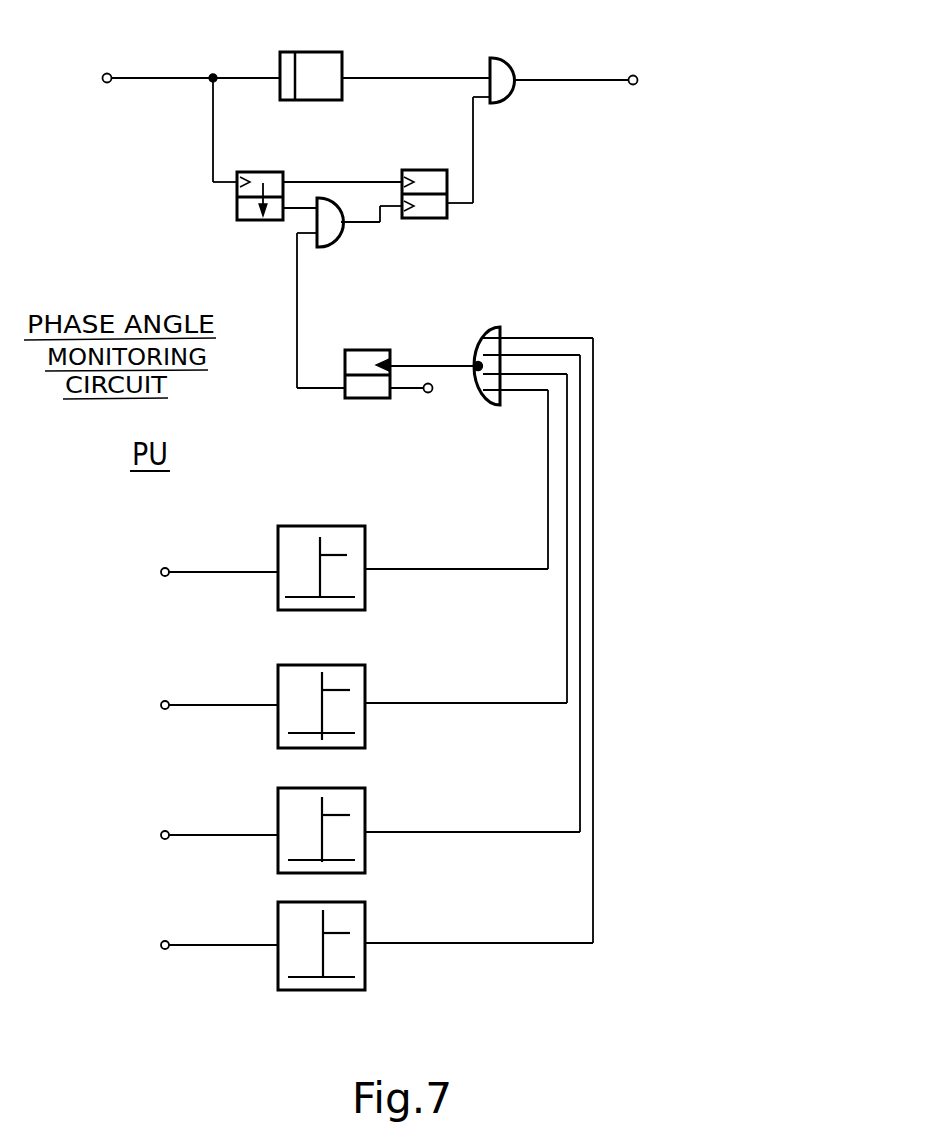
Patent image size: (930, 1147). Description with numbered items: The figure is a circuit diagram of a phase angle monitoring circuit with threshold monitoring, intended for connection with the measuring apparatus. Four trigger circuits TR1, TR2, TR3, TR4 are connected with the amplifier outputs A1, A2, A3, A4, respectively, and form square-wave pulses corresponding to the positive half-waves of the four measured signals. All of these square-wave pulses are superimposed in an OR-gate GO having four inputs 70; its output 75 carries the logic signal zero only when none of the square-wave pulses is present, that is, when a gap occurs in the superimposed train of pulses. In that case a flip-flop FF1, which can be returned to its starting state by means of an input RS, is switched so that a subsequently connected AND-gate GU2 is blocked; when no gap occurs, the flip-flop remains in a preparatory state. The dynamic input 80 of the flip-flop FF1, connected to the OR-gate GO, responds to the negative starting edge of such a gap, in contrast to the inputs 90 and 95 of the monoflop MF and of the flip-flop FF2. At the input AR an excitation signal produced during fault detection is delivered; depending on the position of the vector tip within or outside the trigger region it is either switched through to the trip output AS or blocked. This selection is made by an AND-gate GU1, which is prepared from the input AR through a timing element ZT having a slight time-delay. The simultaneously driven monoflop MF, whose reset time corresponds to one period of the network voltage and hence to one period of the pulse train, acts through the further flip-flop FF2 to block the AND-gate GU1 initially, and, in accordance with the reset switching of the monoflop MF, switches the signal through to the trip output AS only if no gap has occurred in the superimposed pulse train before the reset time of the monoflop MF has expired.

The inputs 70 is at (530, 357).
The output 75 is at (459, 368).
The dynamic input 80 is at (405, 363).
The input 90 is at (226, 178).
The input 95 is at (385, 178).
The input AR is at (84, 79).
The trip output AS is at (659, 80).
The timing element ZT is at (312, 52).
The AND-gate GU1 is at (508, 63).
The AND-gate GU2 is at (340, 243).
The monoflop MF is at (237, 211).
The flip-flop FF1 is at (363, 350).
The flip-flop FF2 is at (417, 170).
The OR-gate GO is at (500, 329).
The input RS is at (443, 410).
The trigger circuit TR1 is at (340, 618).
The trigger circuit TR2 is at (335, 642).
The trigger circuit TR3 is at (380, 850).
The trigger circuit TR4 is at (380, 873).
The amplifier output A1 is at (201, 574).
The amplifier output A2 is at (201, 707).
The amplifier output A3 is at (201, 837).
The amplifier output A4 is at (201, 947).